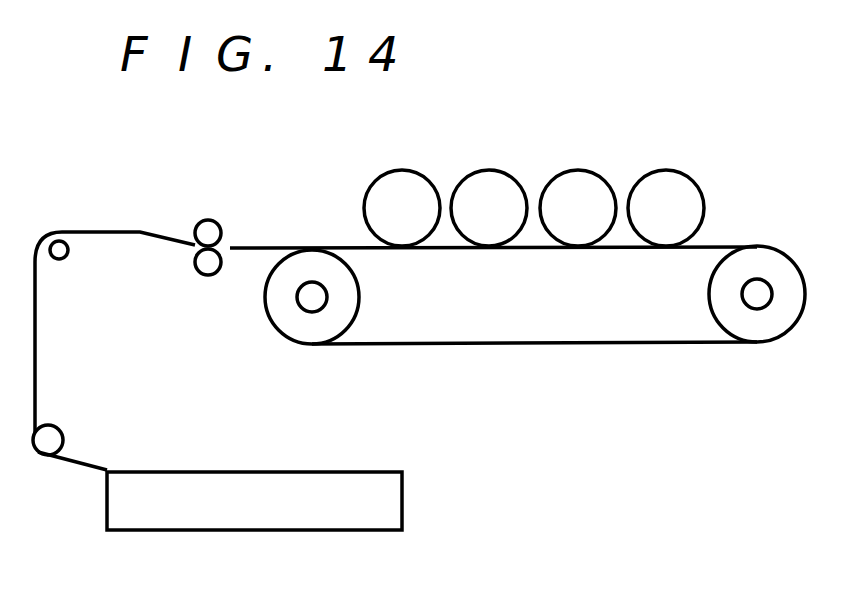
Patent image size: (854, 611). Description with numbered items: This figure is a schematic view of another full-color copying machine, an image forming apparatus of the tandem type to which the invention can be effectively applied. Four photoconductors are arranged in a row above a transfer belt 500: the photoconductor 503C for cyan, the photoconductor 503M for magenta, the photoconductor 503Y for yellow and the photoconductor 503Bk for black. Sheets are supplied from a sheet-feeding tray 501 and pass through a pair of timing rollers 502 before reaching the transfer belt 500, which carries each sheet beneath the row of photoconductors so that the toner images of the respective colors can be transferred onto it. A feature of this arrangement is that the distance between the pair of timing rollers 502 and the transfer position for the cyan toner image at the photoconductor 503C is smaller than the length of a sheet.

The transfer belt 500 is at (425, 345).
The sheet-feeding tray 501 is at (245, 512).
The pair of timing rollers 502 is at (195, 222).
The photoconductor for cyan 503C is at (418, 170).
The photoconductor for magenta 503M is at (502, 168).
The photoconductor for yellow 503Y is at (588, 170).
The photoconductor for black 503Bk is at (690, 148).